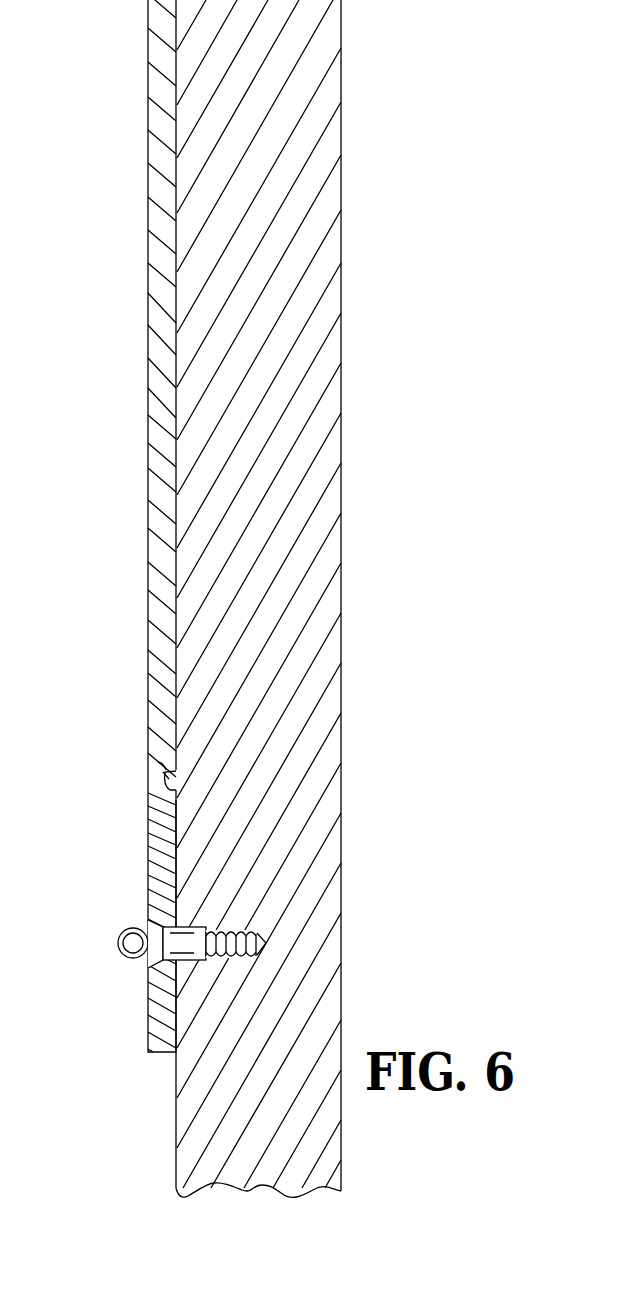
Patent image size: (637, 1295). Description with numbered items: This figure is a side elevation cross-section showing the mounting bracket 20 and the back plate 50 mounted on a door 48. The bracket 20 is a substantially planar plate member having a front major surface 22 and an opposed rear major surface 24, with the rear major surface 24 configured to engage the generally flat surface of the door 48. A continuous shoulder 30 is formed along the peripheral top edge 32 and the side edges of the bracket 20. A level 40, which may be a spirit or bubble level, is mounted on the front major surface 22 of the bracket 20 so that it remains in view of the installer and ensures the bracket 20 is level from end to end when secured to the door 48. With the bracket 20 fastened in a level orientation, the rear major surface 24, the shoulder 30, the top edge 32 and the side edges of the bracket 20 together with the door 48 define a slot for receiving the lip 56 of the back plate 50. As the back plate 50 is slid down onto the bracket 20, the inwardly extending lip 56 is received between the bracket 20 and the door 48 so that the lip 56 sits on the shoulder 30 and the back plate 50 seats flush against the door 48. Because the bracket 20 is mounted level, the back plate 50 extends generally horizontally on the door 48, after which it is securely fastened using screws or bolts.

The mounting bracket 20 is at (145, 527).
The front major surface 22 is at (147, 860).
The rear major surface 24 is at (177, 856).
The shoulder 30 is at (176, 790).
The top edge 32 is at (159, 764).
The level 40 is at (118, 945).
The door 48 is at (325, 367).
The back plate 50 is at (146, 317).
The lip 56 is at (163, 773).